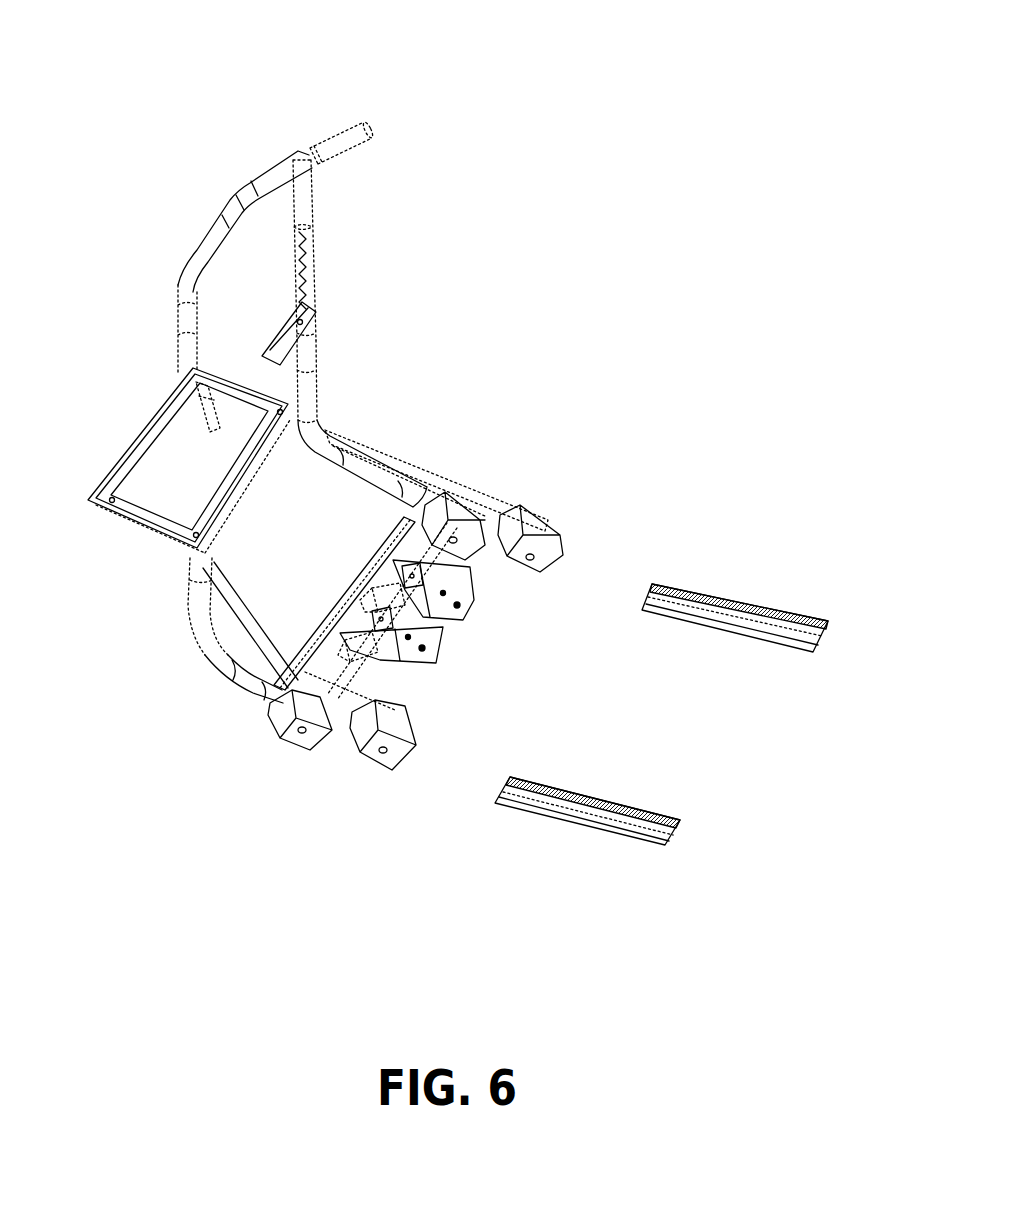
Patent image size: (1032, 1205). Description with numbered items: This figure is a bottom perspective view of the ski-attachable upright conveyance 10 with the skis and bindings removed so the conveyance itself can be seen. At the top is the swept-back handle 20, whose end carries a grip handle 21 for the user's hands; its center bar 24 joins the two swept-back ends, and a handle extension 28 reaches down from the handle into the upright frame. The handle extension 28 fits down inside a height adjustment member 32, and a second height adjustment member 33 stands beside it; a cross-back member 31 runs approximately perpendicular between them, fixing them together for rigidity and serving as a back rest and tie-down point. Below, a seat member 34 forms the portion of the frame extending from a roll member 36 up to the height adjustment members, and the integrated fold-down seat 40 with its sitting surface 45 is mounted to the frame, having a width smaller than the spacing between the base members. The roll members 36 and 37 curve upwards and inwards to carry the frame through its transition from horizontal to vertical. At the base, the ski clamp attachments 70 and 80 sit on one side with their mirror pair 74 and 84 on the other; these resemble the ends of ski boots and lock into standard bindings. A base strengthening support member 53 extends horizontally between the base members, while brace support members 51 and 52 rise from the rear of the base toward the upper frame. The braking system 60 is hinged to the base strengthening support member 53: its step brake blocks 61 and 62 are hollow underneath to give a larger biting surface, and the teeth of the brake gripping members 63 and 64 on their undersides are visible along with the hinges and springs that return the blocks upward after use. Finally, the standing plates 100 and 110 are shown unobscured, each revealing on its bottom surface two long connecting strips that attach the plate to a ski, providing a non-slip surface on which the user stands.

The ski-attachable upright conveyance 10 is at (747, 95).
The swept-back handle 20 is at (172, 168).
The grip handle 21 is at (368, 122).
The center bar 24 is at (218, 217).
The handle extension 28 is at (310, 203).
The cross-back member 31 is at (272, 348).
The height adjustment member 32 is at (316, 277).
The height adjustment member 33 is at (187, 342).
The seat member 34 is at (349, 363).
The roll member 36 is at (366, 440).
The roll member 37 is at (172, 660).
The integrated fold-down seat 40 is at (128, 572).
The sitting surface 45 is at (153, 403).
The brace support member 51 is at (392, 468).
The brace support member 52 is at (258, 608).
The base strengthening support member 53 is at (358, 587).
The braking system 60 is at (629, 799).
The step brake block 61 is at (473, 582).
The step brake block 62 is at (393, 663).
The brake gripping member 63 is at (470, 615).
The brake gripping member 64 is at (437, 657).
The ski clamp attachment 70 is at (505, 488).
The ski clamp attachment 74 is at (280, 785).
The ski clamp attachment 80 is at (570, 524).
The ski clamp attachment 84 is at (384, 805).
The standing plate 100 is at (733, 662).
The standing plate 110 is at (578, 845).